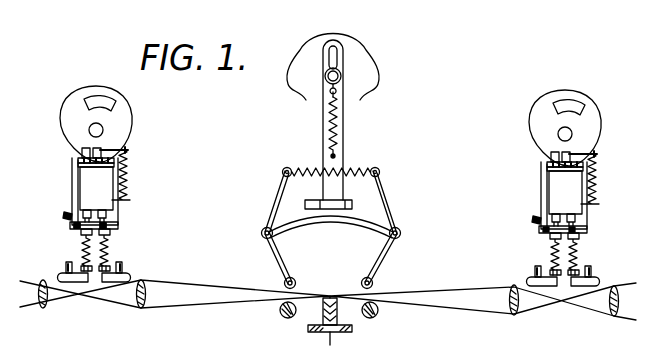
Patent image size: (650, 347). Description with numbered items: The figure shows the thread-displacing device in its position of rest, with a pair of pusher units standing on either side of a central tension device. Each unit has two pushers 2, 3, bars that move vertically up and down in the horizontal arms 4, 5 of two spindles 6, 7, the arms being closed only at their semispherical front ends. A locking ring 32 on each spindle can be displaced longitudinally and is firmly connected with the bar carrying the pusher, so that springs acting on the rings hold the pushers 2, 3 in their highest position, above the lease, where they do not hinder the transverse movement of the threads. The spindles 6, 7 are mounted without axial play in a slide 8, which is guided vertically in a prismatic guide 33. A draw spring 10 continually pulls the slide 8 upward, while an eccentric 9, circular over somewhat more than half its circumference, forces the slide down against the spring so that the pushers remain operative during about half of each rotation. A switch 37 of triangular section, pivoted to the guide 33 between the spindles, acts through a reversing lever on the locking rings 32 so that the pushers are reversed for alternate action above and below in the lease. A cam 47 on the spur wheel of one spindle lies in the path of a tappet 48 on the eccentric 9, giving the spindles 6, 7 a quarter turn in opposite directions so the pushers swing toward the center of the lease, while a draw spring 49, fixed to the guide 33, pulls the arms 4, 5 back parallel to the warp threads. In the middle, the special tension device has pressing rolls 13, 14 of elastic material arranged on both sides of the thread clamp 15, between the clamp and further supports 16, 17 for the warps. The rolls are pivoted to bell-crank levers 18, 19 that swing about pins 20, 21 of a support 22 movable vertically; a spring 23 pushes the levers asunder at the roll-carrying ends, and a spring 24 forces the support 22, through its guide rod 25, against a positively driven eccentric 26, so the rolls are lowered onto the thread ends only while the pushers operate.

The pusher 2 is at (66, 267).
The pusher 3 is at (122, 267).
The horizontal arm 4 is at (80, 283).
The horizontal arm 5 is at (108, 283).
The spindle 6 is at (82, 249).
The spindle 7 is at (109, 249).
The slide 8 is at (95, 183).
The eccentric 9 is at (70, 115).
The draw spring 10 is at (132, 174).
The pressing roll 13 is at (284, 285).
The pressing roll 14 is at (374, 285).
The thread clamp 15 is at (335, 289).
The support 16 is at (281, 314).
The support 17 is at (378, 313).
The bell-crank lever 18 is at (282, 258).
The bell-crank lever 19 is at (386, 256).
The pin 20 is at (261, 233).
The pin 21 is at (401, 233).
The support 22 is at (350, 213).
The spring 23 is at (317, 170).
The spring 24 is at (337, 124).
The guide rod 25 is at (340, 92).
The eccentric 26 is at (296, 78).
The locking ring 32 is at (75, 230).
The prismatic guide 33 is at (72, 190).
The switch 37 is at (105, 222).
The cam 47 is at (90, 148).
The tappet 48 is at (97, 93).
The draw spring 49 is at (78, 215).